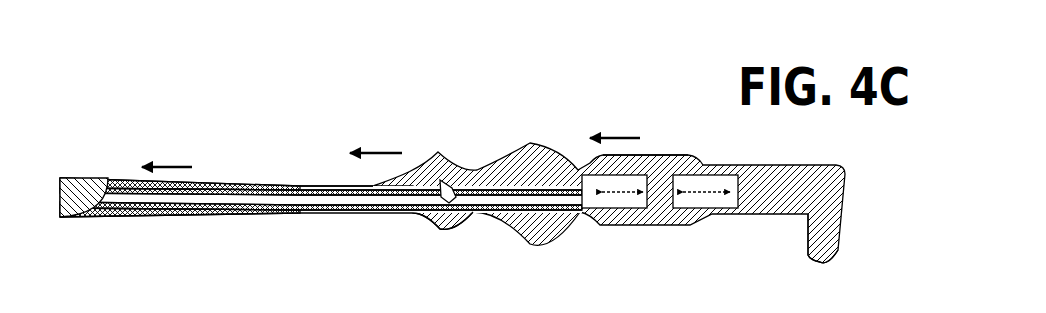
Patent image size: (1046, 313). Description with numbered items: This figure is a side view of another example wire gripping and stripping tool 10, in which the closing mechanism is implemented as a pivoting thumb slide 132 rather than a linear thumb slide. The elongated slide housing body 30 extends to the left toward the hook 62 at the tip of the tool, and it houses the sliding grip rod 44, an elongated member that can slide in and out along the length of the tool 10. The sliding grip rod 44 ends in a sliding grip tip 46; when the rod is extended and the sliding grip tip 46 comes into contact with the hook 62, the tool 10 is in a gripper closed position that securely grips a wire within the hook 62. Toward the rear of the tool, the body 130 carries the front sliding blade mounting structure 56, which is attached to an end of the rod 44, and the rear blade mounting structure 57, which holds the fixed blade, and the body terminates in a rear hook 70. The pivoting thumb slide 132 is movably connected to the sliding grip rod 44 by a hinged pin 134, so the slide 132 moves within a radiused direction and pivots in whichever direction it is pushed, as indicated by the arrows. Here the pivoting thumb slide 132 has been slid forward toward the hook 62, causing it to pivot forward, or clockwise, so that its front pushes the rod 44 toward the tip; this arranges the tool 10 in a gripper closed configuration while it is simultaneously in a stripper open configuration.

The wire gripping and stripping tool 10 is at (546, 97).
The slide housing body 30 is at (262, 178).
The sliding grip rod 44 is at (286, 205).
The sliding grip tip 46 is at (145, 210).
The front sliding blade mounting structure 56 is at (613, 212).
The rear blade mounting structure 57 is at (715, 213).
The hook 62 is at (104, 180).
The rear hook 70 is at (855, 256).
The pivoting thumb slide tool body 130 is at (478, 158).
The pivoting thumb slide 132 is at (430, 166).
The hinged pin 134 is at (425, 220).